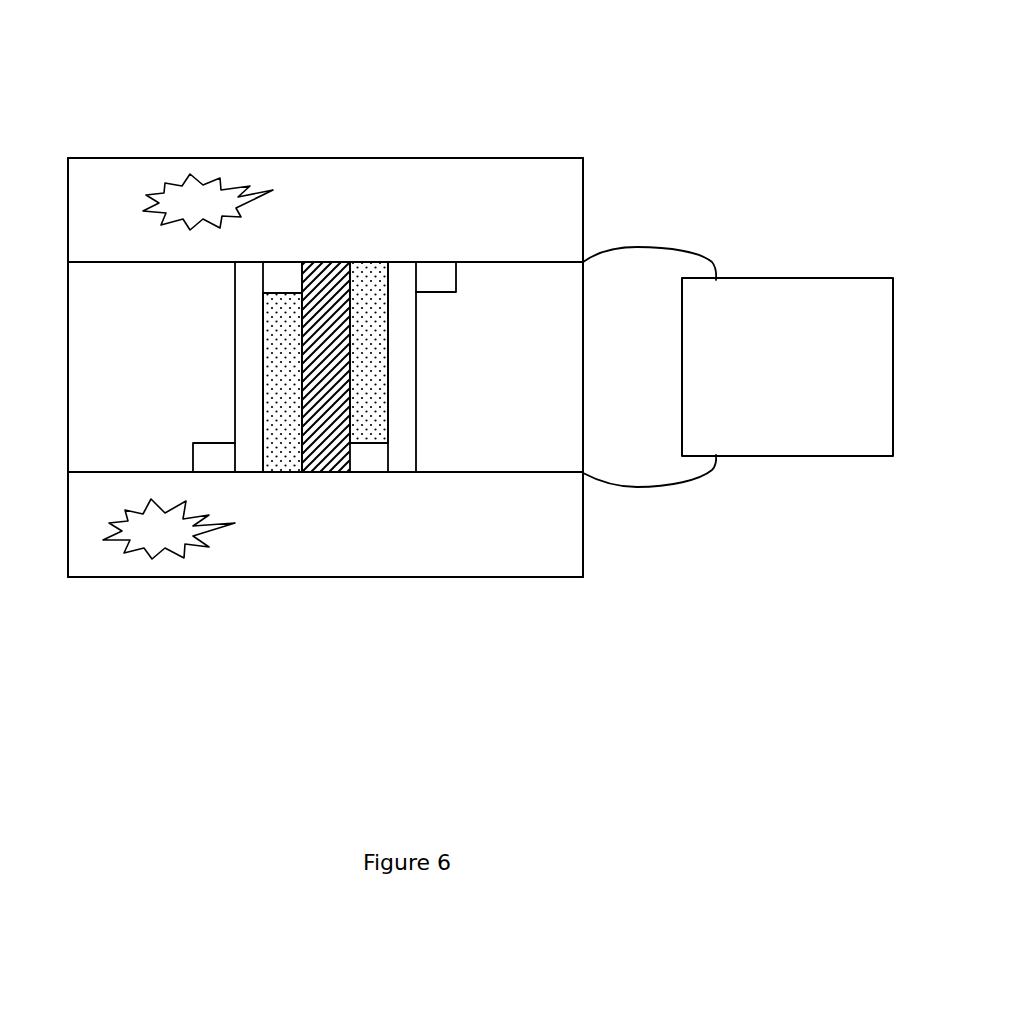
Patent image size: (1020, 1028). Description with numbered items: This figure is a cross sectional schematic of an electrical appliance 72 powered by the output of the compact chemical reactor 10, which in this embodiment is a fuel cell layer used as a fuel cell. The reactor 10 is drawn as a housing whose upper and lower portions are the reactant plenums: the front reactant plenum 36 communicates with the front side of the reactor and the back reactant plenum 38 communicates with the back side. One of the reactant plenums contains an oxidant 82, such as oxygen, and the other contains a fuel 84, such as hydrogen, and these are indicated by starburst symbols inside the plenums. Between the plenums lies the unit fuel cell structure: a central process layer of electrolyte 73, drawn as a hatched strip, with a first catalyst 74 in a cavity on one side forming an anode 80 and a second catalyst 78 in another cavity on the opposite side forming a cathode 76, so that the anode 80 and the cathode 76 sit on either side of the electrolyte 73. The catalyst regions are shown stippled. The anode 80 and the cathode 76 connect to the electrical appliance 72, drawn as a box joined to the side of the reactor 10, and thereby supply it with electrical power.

The compact chemical reactor 10 is at (609, 567).
The front reactant plenum 36 is at (160, 577).
The back reactant plenum 38 is at (108, 157).
The electrical appliance 72 is at (780, 275).
The electrolyte 73 is at (330, 450).
The first catalyst 74 is at (283, 452).
The cathode 76 is at (350, 350).
The second catalyst 78 is at (373, 280).
The anode 80 is at (300, 443).
The oxidant 82 is at (208, 202).
The fuel 84 is at (169, 529).